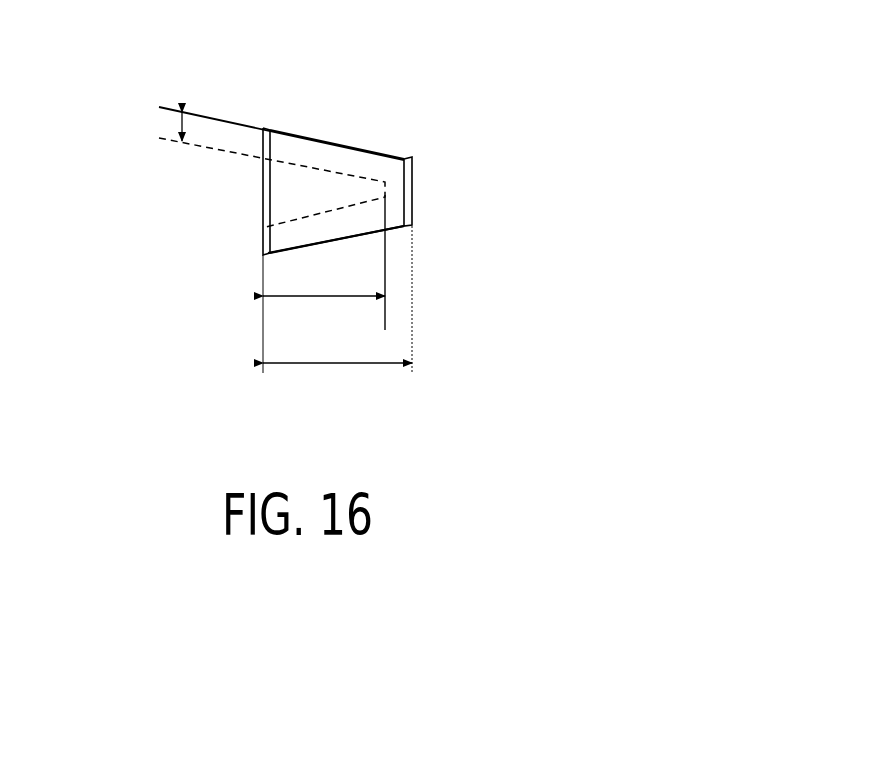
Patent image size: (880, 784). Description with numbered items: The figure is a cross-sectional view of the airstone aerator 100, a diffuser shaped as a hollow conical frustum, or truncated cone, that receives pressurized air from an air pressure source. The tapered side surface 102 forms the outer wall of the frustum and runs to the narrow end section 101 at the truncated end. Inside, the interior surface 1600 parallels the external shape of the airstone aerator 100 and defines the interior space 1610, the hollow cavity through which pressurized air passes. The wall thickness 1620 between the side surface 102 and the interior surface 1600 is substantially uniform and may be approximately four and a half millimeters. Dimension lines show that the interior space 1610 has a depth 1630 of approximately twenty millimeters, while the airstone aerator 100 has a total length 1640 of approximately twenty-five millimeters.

The airstone aerator 100 is at (463, 87).
The end section 101 is at (413, 190).
The side surface 102 is at (377, 150).
The interior surface 1600 is at (315, 166).
The interior space 1610 is at (279, 192).
The thickness 1620 is at (180, 128).
The depth 1630 is at (325, 297).
The total length 1640 is at (333, 364).